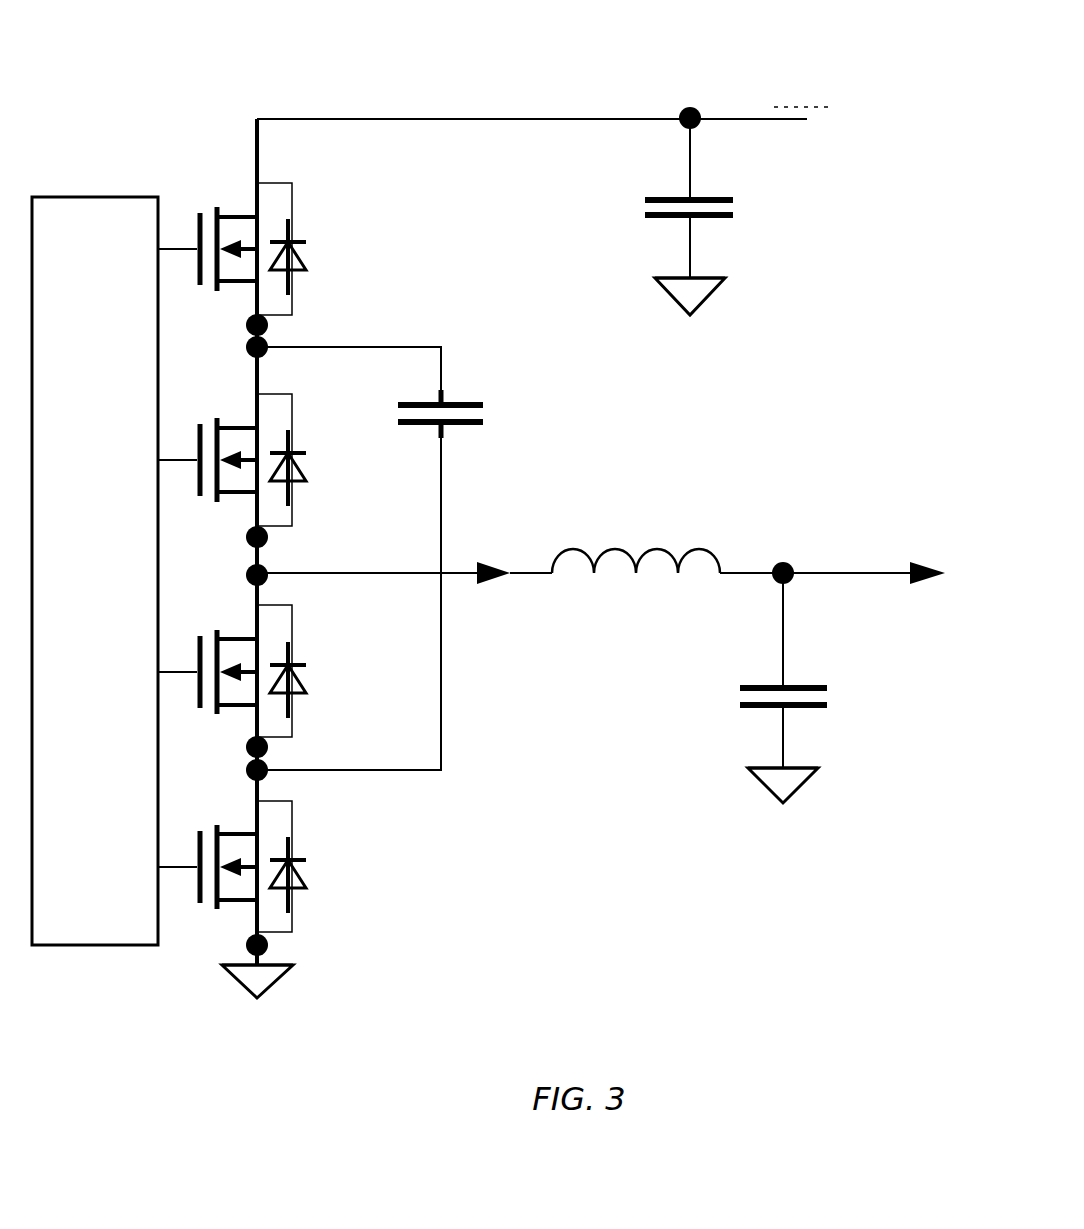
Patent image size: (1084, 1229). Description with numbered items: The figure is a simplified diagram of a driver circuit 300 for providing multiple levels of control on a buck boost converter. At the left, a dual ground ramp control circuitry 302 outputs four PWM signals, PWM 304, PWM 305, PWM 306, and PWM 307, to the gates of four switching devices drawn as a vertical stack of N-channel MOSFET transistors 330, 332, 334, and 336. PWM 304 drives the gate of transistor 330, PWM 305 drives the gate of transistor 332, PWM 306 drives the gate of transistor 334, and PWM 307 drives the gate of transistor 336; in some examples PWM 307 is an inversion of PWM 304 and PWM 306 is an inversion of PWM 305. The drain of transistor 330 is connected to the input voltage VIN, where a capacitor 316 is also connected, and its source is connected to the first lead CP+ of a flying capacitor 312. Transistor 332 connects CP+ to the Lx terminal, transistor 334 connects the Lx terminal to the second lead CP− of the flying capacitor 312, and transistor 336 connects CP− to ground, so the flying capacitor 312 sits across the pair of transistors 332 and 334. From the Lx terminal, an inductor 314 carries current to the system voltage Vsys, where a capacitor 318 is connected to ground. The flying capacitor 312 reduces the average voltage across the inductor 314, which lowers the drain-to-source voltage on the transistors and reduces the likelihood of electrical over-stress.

The driver circuit 300 is at (502, 31).
The dual ground ramp control circuitry 302 is at (95, 571).
The PWM 304 is at (174, 236).
The PWM 305 is at (183, 447).
The PWM 306 is at (183, 652).
The PWM 307 is at (183, 858).
The flying capacitor 312 is at (476, 397).
The inductor 314 is at (623, 592).
The capacitor 316 is at (643, 223).
The capacitor 318 is at (723, 718).
The transistor 330 is at (267, 229).
The transistor 332 is at (273, 441).
The transistor 334 is at (274, 655).
The transistor 336 is at (274, 859).